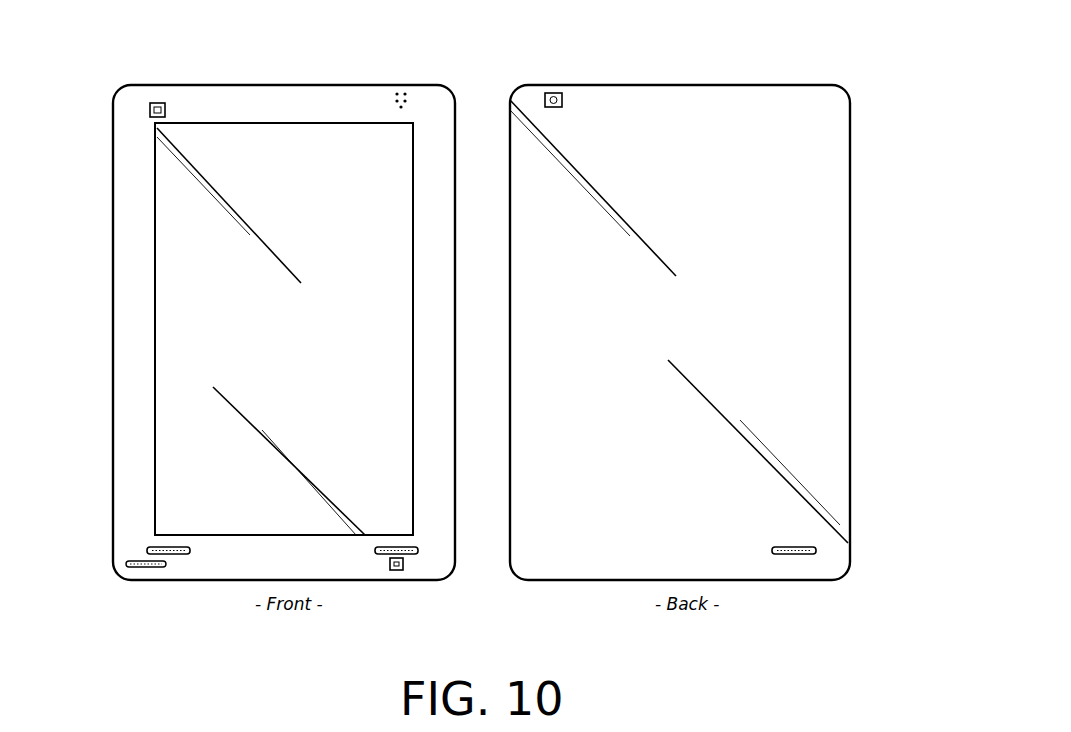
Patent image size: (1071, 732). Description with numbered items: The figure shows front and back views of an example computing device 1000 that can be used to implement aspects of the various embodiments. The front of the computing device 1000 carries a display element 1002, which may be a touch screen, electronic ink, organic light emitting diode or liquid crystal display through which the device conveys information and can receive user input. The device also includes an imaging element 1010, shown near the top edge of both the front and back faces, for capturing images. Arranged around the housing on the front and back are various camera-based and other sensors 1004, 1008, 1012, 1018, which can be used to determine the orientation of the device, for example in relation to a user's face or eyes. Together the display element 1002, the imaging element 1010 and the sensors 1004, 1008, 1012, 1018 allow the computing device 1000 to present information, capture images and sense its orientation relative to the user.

The computing device 1000 is at (880, 92).
The display element 1002 is at (153, 240).
The sensor 1004 is at (153, 110).
The sensor 1008 is at (410, 553).
The imaging element 1010 is at (406, 93).
The sensor 1012 is at (170, 555).
The sensor 1018 is at (143, 568).